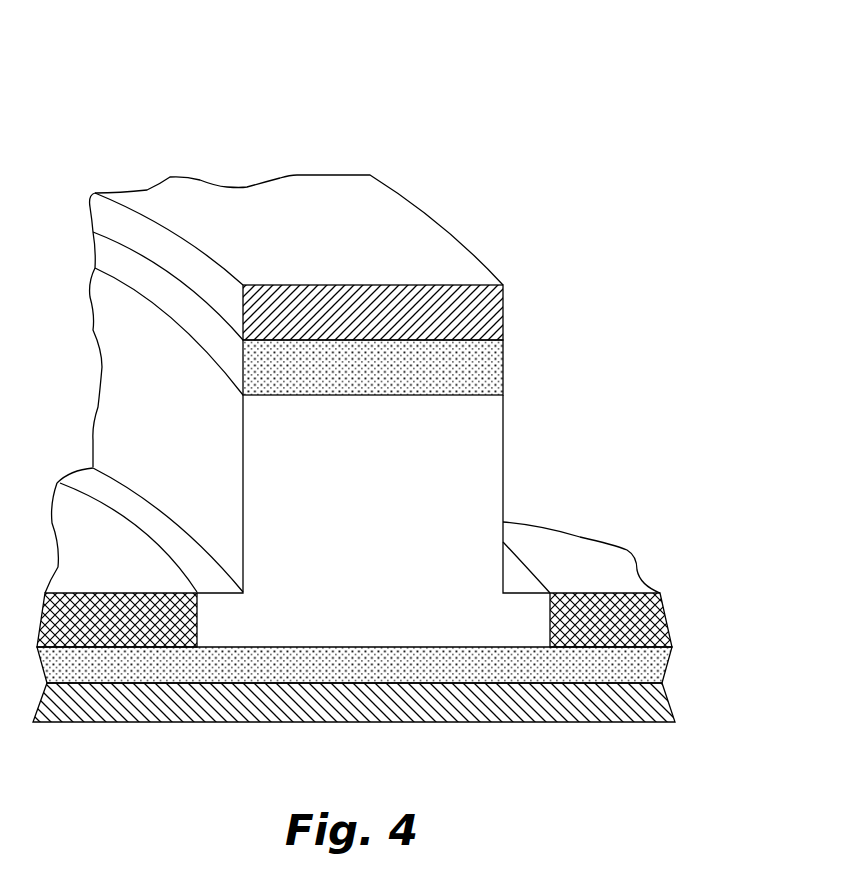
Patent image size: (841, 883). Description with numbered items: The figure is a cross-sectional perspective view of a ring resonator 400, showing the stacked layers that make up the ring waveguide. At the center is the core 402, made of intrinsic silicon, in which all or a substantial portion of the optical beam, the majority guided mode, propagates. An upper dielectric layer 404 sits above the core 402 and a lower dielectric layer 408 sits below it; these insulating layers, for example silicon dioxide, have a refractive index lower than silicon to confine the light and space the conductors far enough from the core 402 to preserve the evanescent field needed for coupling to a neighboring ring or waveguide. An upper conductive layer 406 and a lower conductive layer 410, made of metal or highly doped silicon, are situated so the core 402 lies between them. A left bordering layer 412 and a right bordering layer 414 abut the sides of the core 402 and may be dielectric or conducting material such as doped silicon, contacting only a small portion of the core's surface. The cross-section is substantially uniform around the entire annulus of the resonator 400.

The ring resonator 400 is at (177, 88).
The core 402 is at (356, 521).
The upper dielectric layer 404 is at (354, 372).
The upper conductive layer 406 is at (354, 322).
The lower dielectric layer 408 is at (359, 673).
The lower conductive layer 410 is at (359, 711).
The left bordering layer 412 is at (87, 629).
The right bordering layer 414 is at (591, 629).